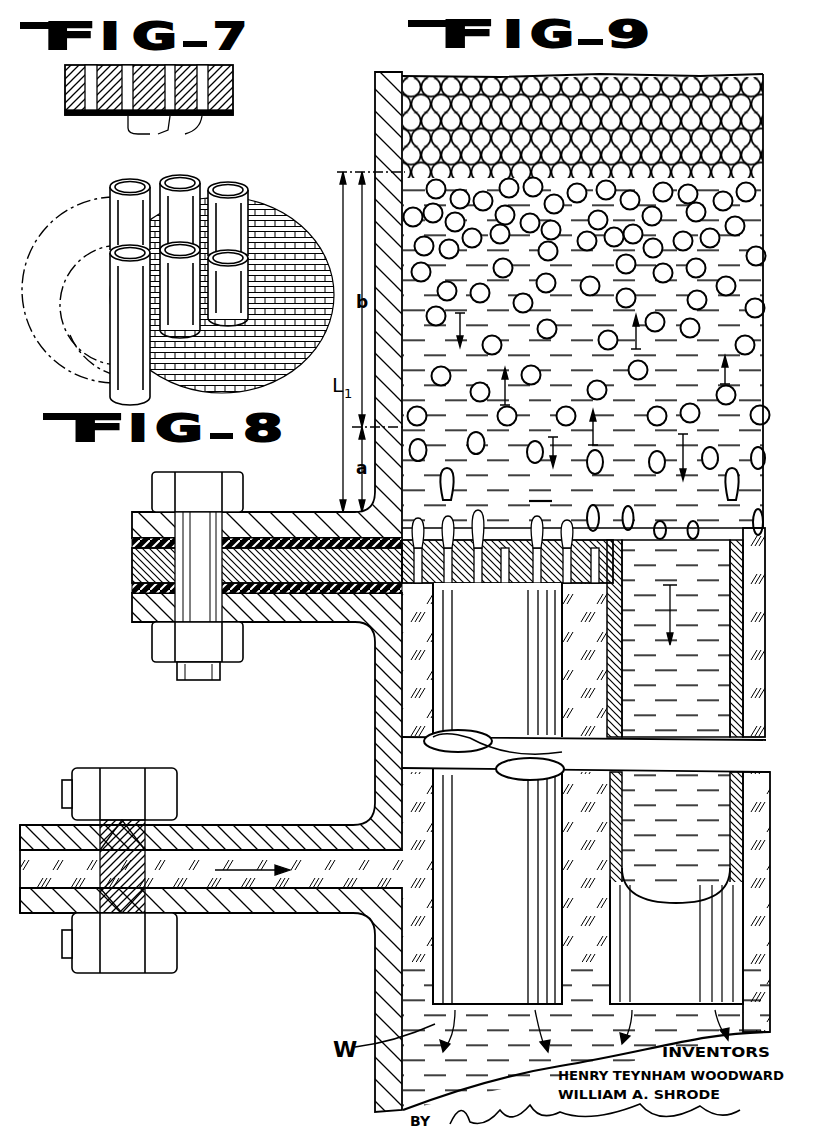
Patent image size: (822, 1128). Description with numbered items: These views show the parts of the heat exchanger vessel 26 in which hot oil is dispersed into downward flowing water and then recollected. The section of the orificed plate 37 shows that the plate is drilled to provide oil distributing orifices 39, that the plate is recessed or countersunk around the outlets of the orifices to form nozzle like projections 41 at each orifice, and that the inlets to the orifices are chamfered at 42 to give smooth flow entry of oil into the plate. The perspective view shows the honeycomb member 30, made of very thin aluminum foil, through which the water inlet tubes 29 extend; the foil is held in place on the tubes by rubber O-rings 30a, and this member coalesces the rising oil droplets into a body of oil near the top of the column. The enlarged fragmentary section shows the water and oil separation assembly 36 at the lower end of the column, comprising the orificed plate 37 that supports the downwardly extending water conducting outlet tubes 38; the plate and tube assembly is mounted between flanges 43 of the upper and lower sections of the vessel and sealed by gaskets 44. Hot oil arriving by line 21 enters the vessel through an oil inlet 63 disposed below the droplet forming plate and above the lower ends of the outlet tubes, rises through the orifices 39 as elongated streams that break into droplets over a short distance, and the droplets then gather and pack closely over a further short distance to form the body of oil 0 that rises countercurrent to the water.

In FIG. 9, the coalesced oil 0 is at (625, 86).
In FIG. 9, the oil line 21 is at (48, 838).
In FIG. 9, the column or vessel 26 is at (376, 103).
In FIG. 8, the water inlet tubes 29 is at (178, 222).
In FIG. 8, the honeycomb member 30 is at (30, 250).
In FIG. 8, the rubber O-rings 30a is at (120, 315).
In FIG. 9, the water and oil separation assembly 36 is at (420, 661).
In FIG. 7, the orificed plate 37 is at (236, 80).
In FIG. 9, the orificed plate 37 is at (285, 565).
In FIG. 9, the water outlet tubes 38 is at (613, 752).
In FIG. 7, the oil distributing orifices 39 is at (130, 92).
In FIG. 9, the oil distributing orifices 39 is at (515, 547).
In FIG. 7, the nozzle like projections 41 is at (91, 66).
In FIG. 9, the nozzle like projections 41 is at (460, 528).
In FIG. 7, the chamfer 42 is at (165, 131).
In FIG. 9, the chamfer 42 is at (450, 598).
In FIG. 9, the flanges 43 is at (136, 520).
In FIG. 9, the gaskets 44 is at (134, 543).
In FIG. 9, the oil inlet 63 is at (262, 830).